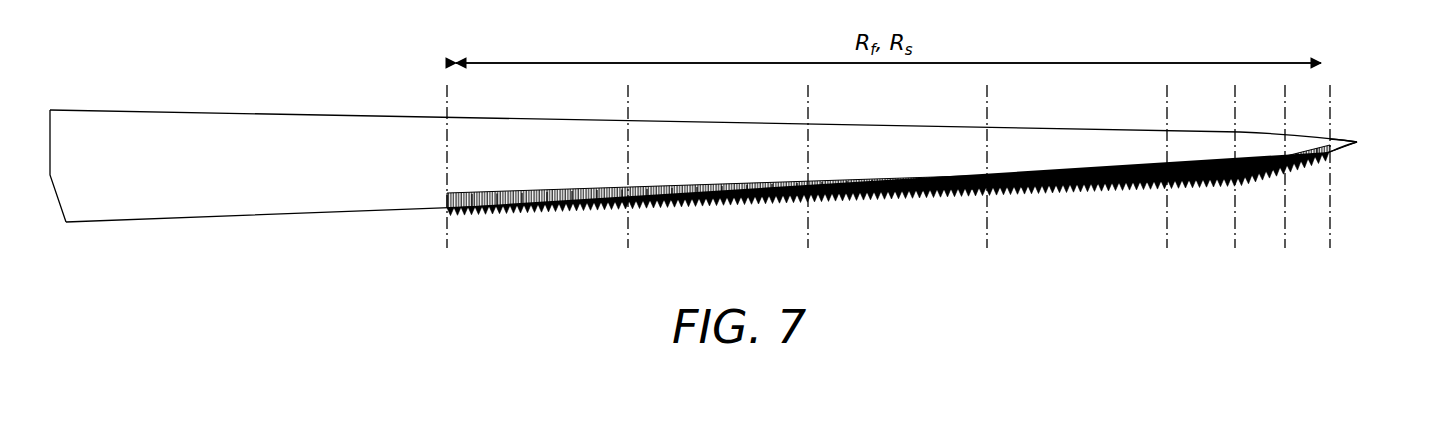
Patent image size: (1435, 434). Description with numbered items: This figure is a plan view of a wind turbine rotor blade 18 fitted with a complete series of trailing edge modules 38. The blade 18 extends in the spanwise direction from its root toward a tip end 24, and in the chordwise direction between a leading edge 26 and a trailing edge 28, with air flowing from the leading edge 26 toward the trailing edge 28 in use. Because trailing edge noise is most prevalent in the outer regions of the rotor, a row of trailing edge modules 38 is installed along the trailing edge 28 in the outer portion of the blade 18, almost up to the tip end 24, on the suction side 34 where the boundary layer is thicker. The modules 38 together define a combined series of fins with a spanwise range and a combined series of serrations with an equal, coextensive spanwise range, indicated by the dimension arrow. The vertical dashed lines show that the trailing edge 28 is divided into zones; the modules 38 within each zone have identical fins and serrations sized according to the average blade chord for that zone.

The blade 18 is at (703, 159).
The tip end 24 is at (1360, 143).
The leading edge 26 is at (261, 114).
The trailing edge 28 is at (194, 222).
The suction side 34 is at (385, 128).
The trailing edge module 38 is at (589, 228).